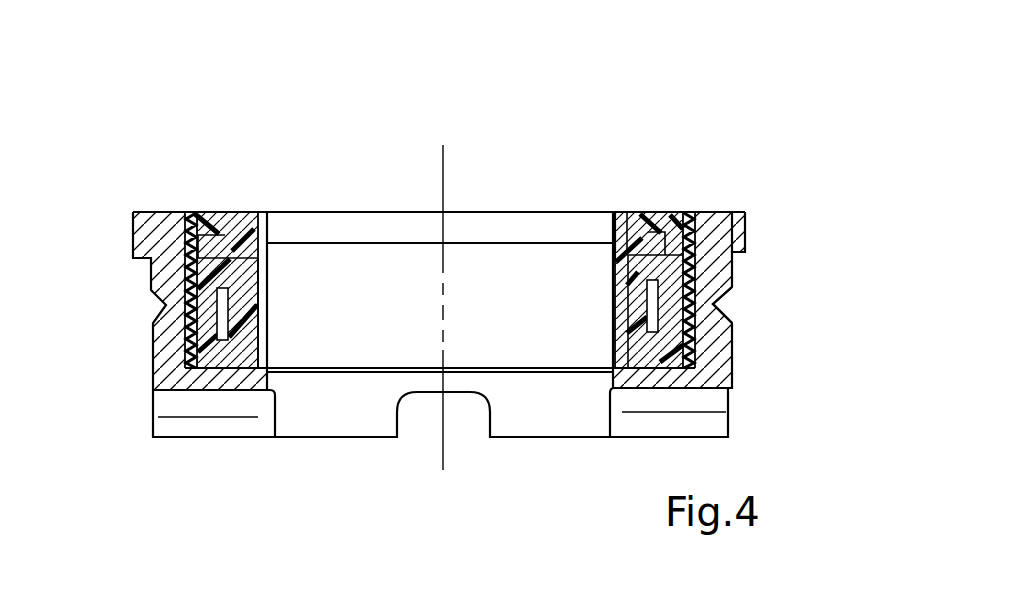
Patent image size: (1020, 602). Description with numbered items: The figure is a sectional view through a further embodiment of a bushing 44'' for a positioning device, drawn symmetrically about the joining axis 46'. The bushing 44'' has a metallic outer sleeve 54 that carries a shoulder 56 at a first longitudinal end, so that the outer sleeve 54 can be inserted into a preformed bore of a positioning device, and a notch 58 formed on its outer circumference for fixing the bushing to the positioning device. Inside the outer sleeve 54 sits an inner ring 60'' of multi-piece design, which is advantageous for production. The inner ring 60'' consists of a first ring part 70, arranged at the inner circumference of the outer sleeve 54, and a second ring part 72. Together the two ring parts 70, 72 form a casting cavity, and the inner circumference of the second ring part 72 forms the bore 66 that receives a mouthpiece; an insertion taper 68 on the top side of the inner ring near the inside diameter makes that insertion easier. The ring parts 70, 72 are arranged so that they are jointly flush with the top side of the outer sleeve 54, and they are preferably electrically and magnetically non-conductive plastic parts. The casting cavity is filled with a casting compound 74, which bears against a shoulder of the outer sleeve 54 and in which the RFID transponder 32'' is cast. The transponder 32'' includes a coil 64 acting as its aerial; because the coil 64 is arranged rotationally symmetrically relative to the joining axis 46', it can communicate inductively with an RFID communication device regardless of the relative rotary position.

The bushing 44'' is at (513, 231).
The joining axis 46' is at (470, 276).
The transponder 32'' is at (246, 330).
The outer sleeve 54 is at (732, 353).
The shoulder 56 is at (747, 230).
The notch 58 is at (725, 298).
The inner ring 60'' is at (659, 302).
The coil 64 is at (197, 212).
The bore 66 is at (268, 342).
The insertion taper 68 is at (615, 208).
The first ring part 70 is at (682, 206).
The second ring part 72 is at (632, 206).
The casting compound 74 is at (657, 350).